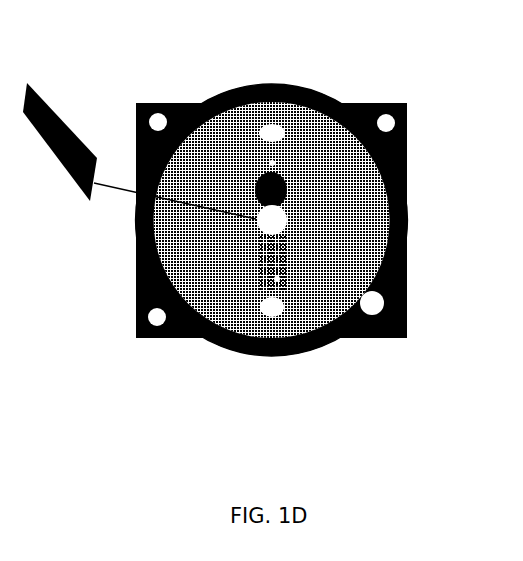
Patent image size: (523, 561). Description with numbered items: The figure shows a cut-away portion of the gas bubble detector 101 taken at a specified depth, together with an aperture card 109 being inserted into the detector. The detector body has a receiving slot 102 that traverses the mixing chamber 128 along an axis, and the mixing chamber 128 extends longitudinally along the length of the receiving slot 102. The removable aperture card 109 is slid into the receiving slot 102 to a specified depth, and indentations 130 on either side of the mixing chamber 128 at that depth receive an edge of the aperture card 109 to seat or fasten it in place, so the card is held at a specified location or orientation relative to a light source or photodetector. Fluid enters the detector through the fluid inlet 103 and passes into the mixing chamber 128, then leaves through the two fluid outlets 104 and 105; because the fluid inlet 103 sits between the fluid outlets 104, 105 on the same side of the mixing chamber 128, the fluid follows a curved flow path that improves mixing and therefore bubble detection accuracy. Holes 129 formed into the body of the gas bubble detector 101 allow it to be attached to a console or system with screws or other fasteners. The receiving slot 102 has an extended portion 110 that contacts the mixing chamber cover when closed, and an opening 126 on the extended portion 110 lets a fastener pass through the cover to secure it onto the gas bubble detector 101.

The gas bubble detector 101 is at (197, 103).
The receiving slot 102 is at (280, 192).
The fluid inlet 103 is at (284, 223).
The fluid outlet 104 is at (272, 126).
The fluid outlet 105 is at (274, 314).
The aperture card 109 is at (43, 88).
The extended portion 110 is at (329, 93).
The opening 126 is at (378, 305).
The mixing chamber 128 is at (268, 262).
The holes 129 is at (146, 103).
The indentations 130 is at (275, 161).